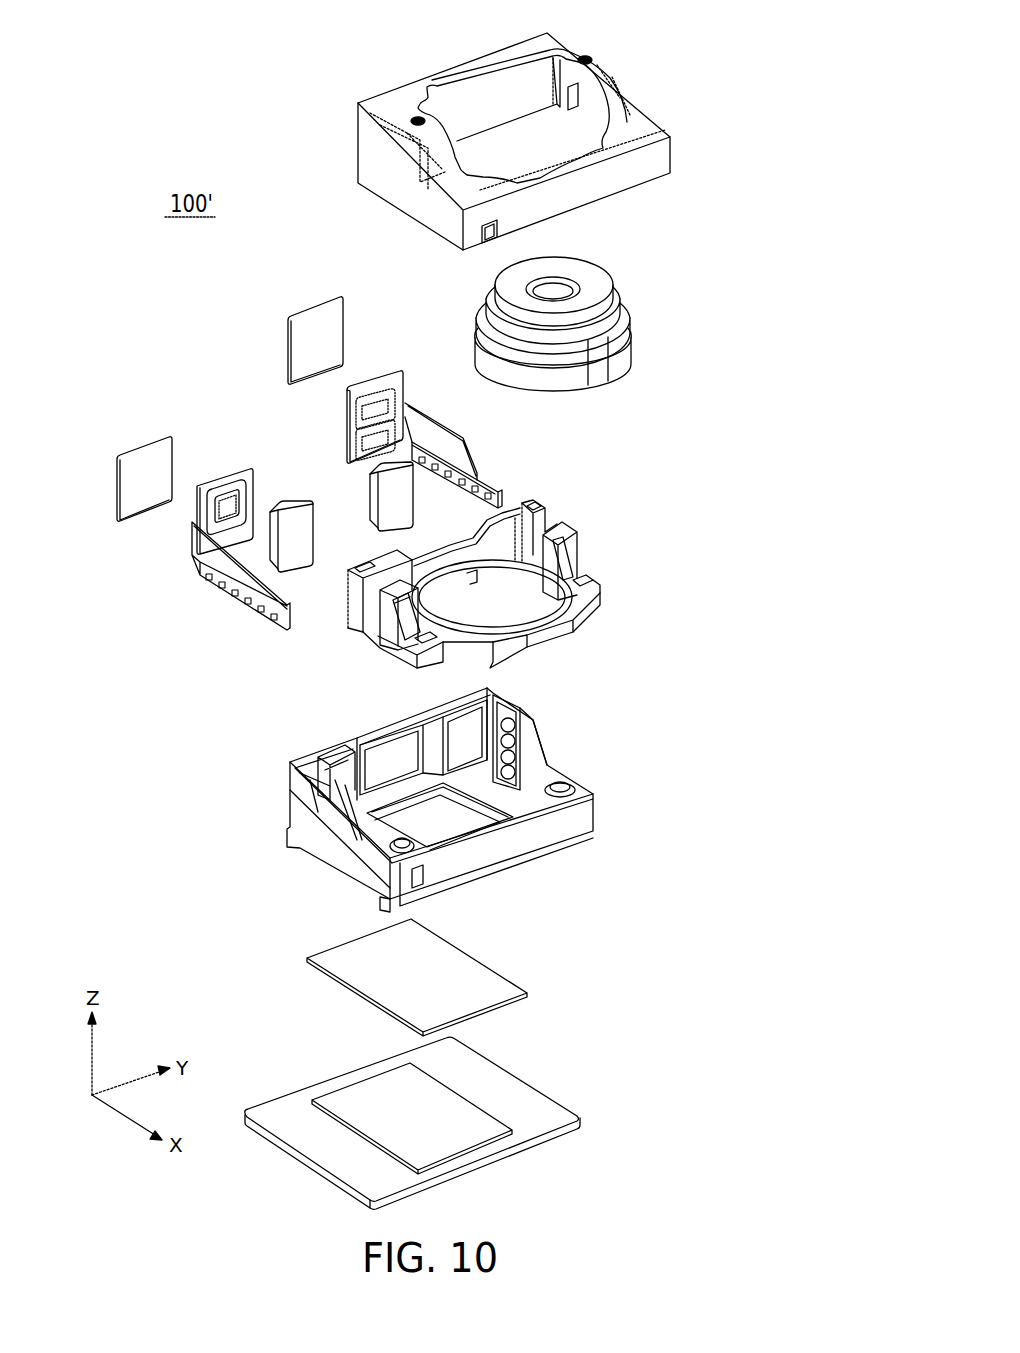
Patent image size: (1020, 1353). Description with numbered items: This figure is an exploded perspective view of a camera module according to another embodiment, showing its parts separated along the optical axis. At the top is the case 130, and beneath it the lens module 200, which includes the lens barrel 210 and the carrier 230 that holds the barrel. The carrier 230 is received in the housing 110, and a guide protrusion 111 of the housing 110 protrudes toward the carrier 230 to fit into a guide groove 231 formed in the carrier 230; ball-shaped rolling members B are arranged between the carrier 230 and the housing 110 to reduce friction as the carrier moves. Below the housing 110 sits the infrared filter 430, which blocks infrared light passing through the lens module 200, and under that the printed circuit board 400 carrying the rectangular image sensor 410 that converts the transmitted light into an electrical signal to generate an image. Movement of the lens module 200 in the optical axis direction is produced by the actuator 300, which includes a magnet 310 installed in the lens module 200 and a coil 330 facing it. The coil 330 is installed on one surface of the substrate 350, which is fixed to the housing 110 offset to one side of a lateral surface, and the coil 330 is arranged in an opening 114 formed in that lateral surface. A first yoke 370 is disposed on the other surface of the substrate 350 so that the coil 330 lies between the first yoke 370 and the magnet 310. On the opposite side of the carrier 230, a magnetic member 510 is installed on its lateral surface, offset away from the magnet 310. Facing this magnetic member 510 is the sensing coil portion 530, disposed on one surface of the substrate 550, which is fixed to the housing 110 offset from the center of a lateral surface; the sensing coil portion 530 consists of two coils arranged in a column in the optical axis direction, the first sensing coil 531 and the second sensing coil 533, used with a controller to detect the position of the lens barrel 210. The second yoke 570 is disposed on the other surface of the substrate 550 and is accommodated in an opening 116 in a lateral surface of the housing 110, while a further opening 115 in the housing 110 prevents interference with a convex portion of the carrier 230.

The case 130 is at (360, 150).
The lens module 200 is at (731, 305).
The lens barrel 210 is at (635, 352).
The carrier 230 is at (508, 507).
The guide groove 231 is at (543, 507).
The actuator 300 is at (310, 414).
The magnet 310 is at (297, 500).
The coil 330 is at (232, 493).
The substrate 350 is at (197, 503).
The first yoke 370 is at (145, 452).
The magnetic member 510 is at (378, 497).
The sensing coil portion 530 is at (465, 331).
The first sensing coil 531 is at (392, 388).
The second sensing coil 533 is at (428, 417).
The substrate 550 is at (370, 380).
The second yoke 570 is at (316, 312).
The housing 110 is at (470, 785).
The guide protrusion 111 is at (513, 705).
The rolling member B is at (510, 730).
The opening 114 is at (335, 763).
The opening 115 is at (385, 762).
The opening 116 is at (462, 695).
The printed circuit board 400 is at (537, 1113).
The image sensor 410 is at (447, 1100).
The infrared filter 430 is at (498, 988).